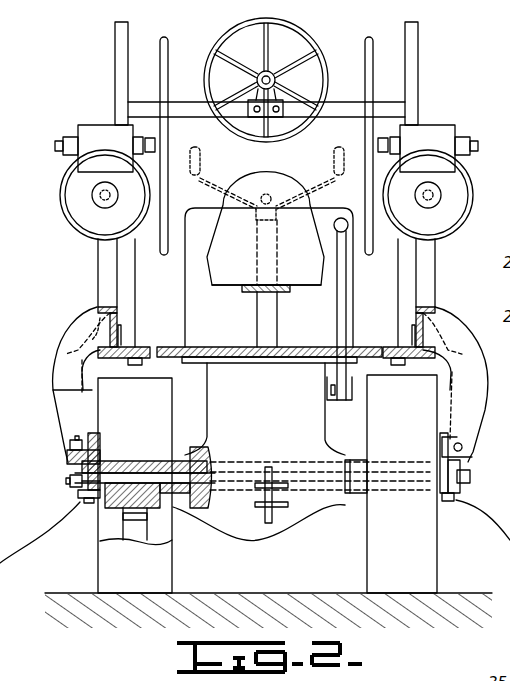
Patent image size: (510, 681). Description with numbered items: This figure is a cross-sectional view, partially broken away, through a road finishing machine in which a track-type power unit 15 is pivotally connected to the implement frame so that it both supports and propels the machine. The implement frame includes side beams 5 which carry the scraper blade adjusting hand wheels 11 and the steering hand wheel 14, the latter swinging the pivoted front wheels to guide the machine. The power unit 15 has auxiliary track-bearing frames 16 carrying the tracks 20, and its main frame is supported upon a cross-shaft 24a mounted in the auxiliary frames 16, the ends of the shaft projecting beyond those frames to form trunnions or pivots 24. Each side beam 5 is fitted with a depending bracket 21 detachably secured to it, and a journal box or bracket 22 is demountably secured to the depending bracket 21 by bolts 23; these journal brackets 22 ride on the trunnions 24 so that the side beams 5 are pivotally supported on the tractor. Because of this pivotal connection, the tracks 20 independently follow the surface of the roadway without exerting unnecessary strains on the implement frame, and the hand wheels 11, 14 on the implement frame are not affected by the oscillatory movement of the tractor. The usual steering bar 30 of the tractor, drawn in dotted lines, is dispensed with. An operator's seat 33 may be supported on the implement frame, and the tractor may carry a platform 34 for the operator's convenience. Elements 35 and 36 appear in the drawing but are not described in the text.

The side beams 5 is at (117, 312).
The hand wheels 11 is at (168, 46).
The hand wheel 14 is at (317, 52).
The power unit 15 is at (320, 427).
The auxiliary track-bearing frames 16 is at (110, 498).
The tracks 20 is at (168, 583).
The depending brackets 21 is at (55, 374).
The journal boxes or brackets 22 is at (90, 493).
The bolts 23 is at (75, 446).
The trunnions or pivots 24 is at (70, 482).
The cross-shaft 24a is at (200, 477).
The steering bar 30 is at (218, 182).
The operator's seat 33 is at (313, 276).
The platform 34 is at (207, 347).
The spindle 35 is at (273, 334).
The handle 36 is at (290, 186).